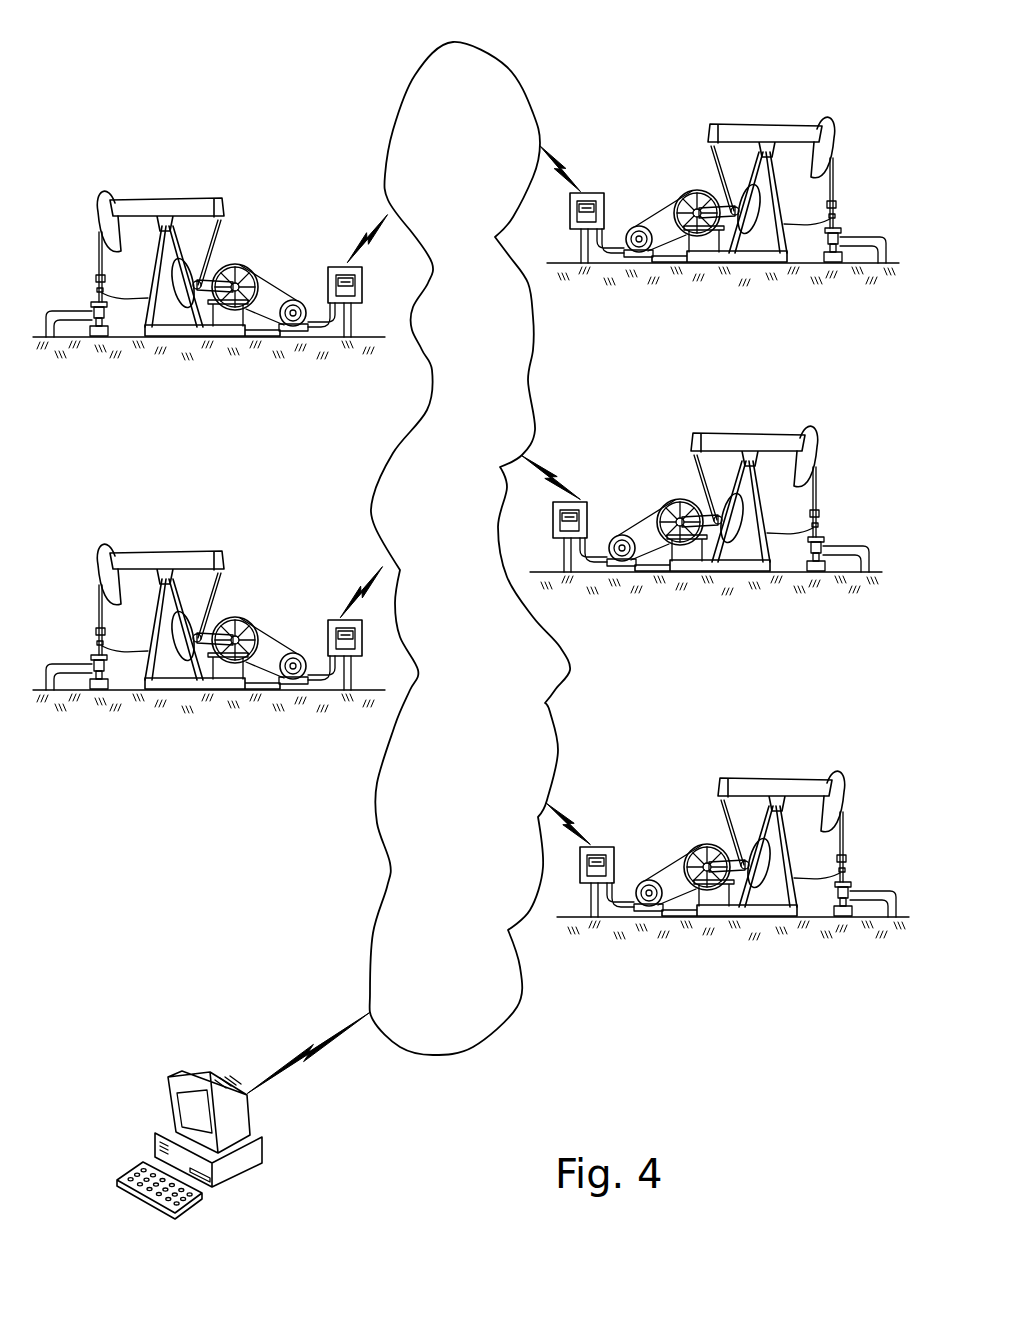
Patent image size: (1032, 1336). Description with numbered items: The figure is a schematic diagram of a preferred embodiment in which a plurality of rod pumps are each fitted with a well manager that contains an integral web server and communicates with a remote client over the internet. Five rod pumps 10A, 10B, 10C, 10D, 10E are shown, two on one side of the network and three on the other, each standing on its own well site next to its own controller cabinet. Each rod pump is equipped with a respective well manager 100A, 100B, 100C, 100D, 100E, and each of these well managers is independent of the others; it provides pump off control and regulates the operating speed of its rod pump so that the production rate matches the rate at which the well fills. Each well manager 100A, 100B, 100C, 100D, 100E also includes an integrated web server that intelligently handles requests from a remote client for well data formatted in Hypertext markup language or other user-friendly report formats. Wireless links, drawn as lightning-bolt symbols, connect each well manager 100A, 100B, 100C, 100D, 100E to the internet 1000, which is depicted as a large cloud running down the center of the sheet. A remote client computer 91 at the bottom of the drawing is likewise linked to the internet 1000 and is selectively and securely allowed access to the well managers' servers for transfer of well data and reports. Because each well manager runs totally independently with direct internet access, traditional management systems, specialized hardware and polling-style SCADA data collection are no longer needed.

The rod pump 10A is at (136, 162).
The rod pump 10B is at (153, 508).
The rod pump 10C is at (768, 92).
The rod pump 10D is at (802, 404).
The rod pump 10E is at (804, 733).
The well manager 100A is at (342, 266).
The well manager 100B is at (333, 620).
The well manager 100C is at (605, 197).
The well manager 100D is at (585, 499).
The well manager 100E is at (600, 847).
The internet 1000 is at (378, 824).
The remote client computer 91 is at (261, 1140).